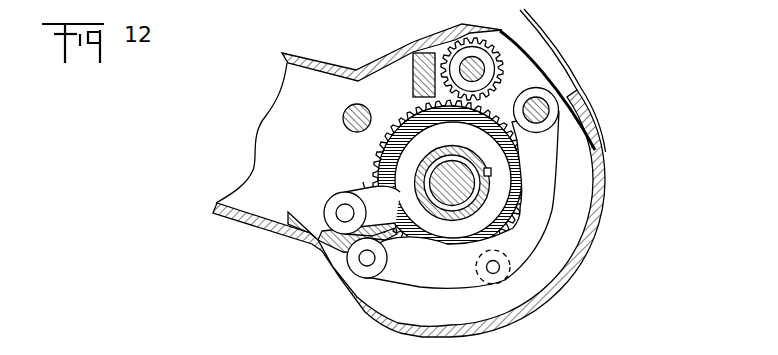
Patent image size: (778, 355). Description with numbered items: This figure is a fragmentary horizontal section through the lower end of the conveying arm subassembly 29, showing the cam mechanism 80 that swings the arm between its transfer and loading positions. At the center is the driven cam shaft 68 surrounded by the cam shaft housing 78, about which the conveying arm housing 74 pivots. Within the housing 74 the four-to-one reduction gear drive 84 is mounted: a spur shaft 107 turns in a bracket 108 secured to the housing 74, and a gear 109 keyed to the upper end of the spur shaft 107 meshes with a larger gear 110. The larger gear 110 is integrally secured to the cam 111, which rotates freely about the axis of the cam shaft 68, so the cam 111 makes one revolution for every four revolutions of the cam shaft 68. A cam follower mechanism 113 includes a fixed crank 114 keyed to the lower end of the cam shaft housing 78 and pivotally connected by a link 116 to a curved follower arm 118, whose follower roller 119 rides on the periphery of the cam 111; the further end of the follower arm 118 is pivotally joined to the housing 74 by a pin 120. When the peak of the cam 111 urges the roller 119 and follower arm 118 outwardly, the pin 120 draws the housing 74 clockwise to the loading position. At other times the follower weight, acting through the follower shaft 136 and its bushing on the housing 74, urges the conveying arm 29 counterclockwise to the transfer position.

The conveying arm subassembly 29 is at (185, 128).
The cam shaft 68 is at (450, 182).
The conveying arm housing 74 is at (255, 226).
The cam shaft housing 78 is at (437, 216).
The cam mechanism 80 is at (426, 172).
The reduction gear drive 84 is at (451, 167).
The spur shaft 107 is at (490, 54).
The bracket 108 is at (420, 8).
The gear 109 is at (486, 90).
The larger gear 110 is at (383, 139).
The cam 111 is at (377, 150).
The cam follower mechanism 113 is at (452, 316).
The fixed crank 114 is at (378, 182).
The link 116 is at (347, 248).
The curved follower arm 118 is at (521, 248).
The follower roller 119 is at (492, 283).
The pin 120 is at (537, 109).
The follower shaft 136 is at (343, 113).